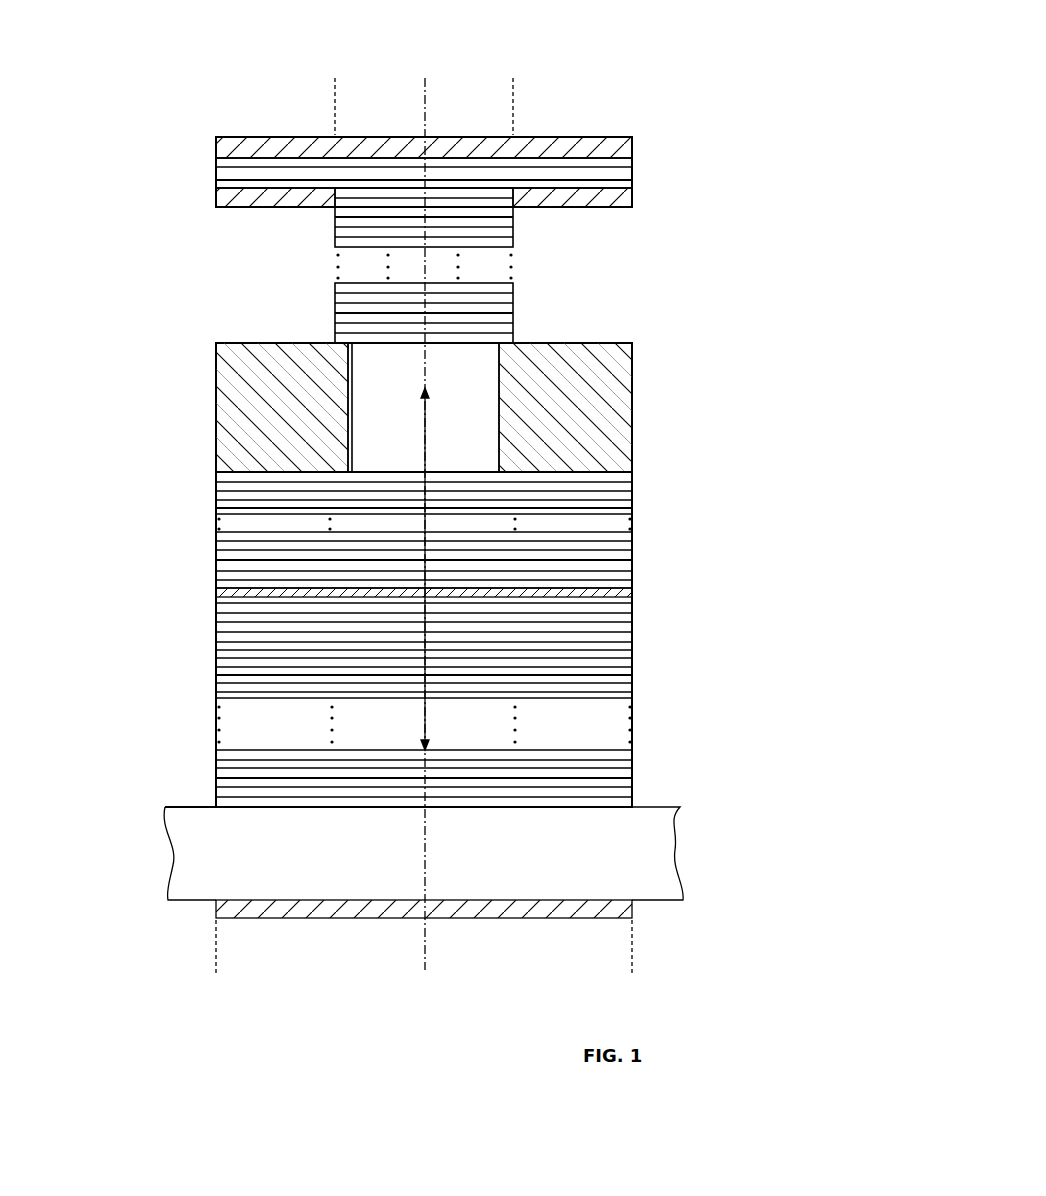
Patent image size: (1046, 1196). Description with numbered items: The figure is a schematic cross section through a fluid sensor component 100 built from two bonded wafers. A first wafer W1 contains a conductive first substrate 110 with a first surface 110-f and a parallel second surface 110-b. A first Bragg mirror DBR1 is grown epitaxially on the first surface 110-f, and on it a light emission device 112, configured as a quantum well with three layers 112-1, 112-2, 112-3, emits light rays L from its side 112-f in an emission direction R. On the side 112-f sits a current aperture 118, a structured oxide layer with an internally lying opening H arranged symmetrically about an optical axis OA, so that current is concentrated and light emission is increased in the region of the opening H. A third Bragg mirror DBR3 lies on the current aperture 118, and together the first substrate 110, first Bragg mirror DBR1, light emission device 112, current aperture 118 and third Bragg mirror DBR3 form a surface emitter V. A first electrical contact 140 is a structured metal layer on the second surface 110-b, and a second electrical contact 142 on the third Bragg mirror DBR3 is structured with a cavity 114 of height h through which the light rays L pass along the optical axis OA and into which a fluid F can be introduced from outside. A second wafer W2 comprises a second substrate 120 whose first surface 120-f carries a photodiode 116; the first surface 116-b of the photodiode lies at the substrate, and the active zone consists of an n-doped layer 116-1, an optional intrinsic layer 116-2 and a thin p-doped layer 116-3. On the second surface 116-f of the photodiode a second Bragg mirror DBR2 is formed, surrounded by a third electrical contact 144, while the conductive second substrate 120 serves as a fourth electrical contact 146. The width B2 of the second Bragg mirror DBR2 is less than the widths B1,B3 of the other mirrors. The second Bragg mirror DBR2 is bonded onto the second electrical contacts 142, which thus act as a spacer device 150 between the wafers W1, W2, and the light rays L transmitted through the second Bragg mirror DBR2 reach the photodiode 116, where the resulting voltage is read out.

The fluid sensor component 100 is at (277, 88).
The first substrate 110 is at (668, 874).
The first surface of first substrate 110-f is at (196, 806).
The second surface of first substrate 110-b is at (195, 902).
The light emission device 112 is at (643, 600).
The first layer of light emission device 112-1 is at (222, 636).
The second layer of light emission device 112-2 is at (222, 622).
The third layer of light emission device 112-3 is at (222, 604).
The side of light emission device facing away from first Bragg mirror 112-f is at (638, 598).
The cavity 114 is at (375, 365).
The photodiode 116 is at (200, 158).
The n-doped layer 116-1 is at (634, 163).
The intrinsic layer 116-2 is at (634, 173).
The p-doped layer 116-3 is at (634, 182).
The first surface of photodiode 116-b is at (216, 159).
The second surface of photodiode 116-f is at (216, 188).
The current aperture 118 is at (220, 596).
The second substrate 120 is at (634, 140).
The first surface of second substrate 120-f is at (250, 152).
The first electrical contact 140 is at (625, 910).
The second electrical contact 142 is at (245, 438).
The third electrical contact 144 is at (238, 202).
The fourth electrical contact 146 is at (556, 148).
The spacer device 150 is at (245, 402).
The first Bragg mirror DBR1 is at (643, 645).
The second Bragg mirror DBR2 is at (644, 207).
The third Bragg mirror DBR3 is at (204, 472).
The optical axis OA is at (430, 950).
The widths of first and third Bragg mirrors B1,B3 is at (632, 976).
The width of second Bragg mirror B2 is at (513, 77).
The first wafer W1 is at (97, 343).
The second wafer W2 is at (754, 135).
The surface emitter V is at (764, 470).
The height of cavity h is at (358, 470).
The light rays L is at (423, 432).
The emission direction R is at (427, 420).
The fluid F is at (485, 370).
The opening H is at (460, 590).